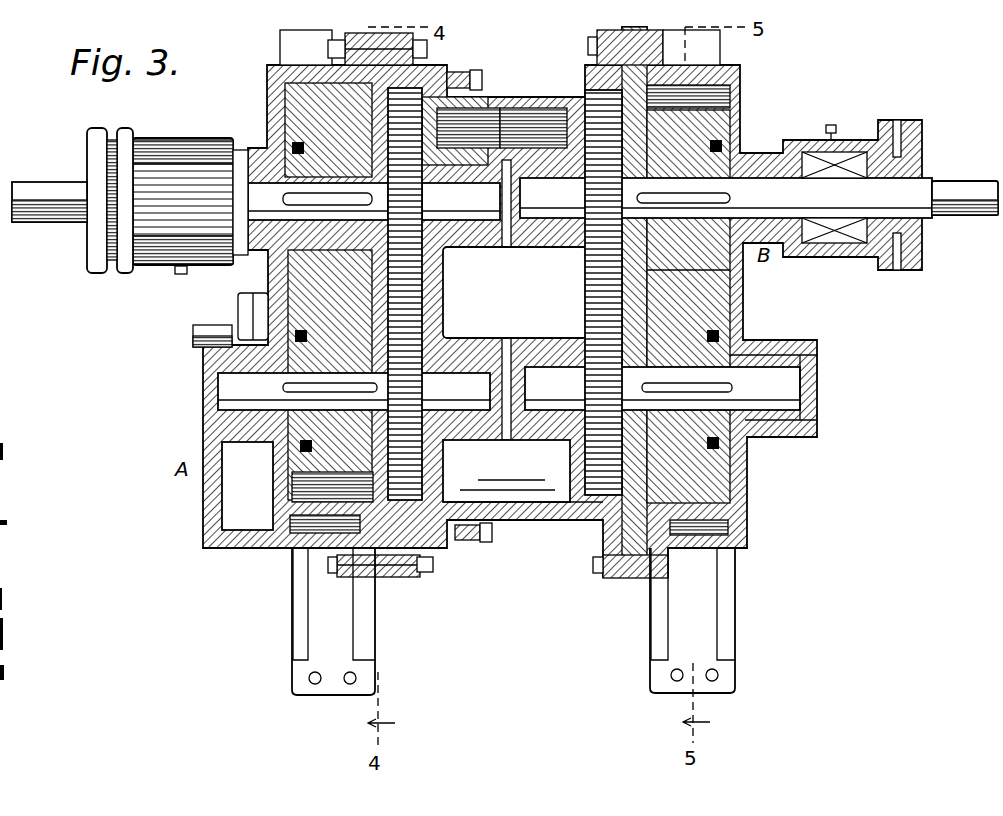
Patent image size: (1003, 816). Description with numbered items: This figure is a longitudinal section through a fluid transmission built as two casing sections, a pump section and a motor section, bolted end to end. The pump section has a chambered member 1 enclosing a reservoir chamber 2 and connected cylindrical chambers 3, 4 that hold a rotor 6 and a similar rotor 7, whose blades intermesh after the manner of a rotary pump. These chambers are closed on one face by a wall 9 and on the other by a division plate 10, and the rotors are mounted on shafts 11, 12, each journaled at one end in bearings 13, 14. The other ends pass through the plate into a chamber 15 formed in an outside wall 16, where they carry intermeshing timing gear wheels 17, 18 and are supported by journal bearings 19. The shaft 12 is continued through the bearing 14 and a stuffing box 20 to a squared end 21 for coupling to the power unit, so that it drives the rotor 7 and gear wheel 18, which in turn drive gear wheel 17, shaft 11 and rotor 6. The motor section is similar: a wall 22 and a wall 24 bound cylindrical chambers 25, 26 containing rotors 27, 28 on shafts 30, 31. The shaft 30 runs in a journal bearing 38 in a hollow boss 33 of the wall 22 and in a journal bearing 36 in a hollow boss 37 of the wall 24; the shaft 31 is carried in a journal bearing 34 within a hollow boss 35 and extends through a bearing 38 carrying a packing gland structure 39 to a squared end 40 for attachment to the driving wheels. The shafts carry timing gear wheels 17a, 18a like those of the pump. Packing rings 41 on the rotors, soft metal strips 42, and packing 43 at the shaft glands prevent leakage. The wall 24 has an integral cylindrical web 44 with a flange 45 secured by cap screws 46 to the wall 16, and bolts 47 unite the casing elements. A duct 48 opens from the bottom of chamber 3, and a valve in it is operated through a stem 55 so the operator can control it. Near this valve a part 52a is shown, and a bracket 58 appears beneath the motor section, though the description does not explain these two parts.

The chambered member 1 is at (205, 492).
The chamber 2 is at (247, 486).
The chamber 3 is at (331, 502).
The chamber 4 is at (283, 90).
The rotor 6 is at (308, 462).
The rotor 7 is at (290, 108).
The wall 9 is at (284, 450).
The division plate 10 is at (380, 578).
The shaft 11 is at (354, 391).
The shaft 12 is at (374, 201).
The bearing 13 is at (222, 420).
The bearing 14 is at (253, 266).
The chamber 15 is at (443, 268).
The outside wall 16 is at (443, 286).
The gear wheel 17 is at (447, 448).
The timing gear wheel 17a is at (516, 473).
The gear wheel 18 is at (410, 97).
The timing gear wheel 18a is at (600, 110).
The journal bearings 19 is at (468, 350).
The stuffing box 20 is at (190, 206).
The squared end 21 is at (48, 220).
The wall 22 is at (745, 283).
The wall 24 is at (578, 292).
The chamber 25 is at (737, 500).
The chamber 26 is at (735, 97).
The rotor 27 is at (718, 482).
The rotor 28 is at (735, 110).
The shaft 30 is at (662, 388).
The shaft 31 is at (726, 198).
The hollow boss 33 is at (805, 437).
The journal bearing 34 is at (525, 250).
The hollow boss 35 is at (542, 243).
The journal bearing 36 is at (592, 440).
The hollow boss 37 is at (509, 452).
The bearing 38 is at (785, 138).
The packing gland structure 39 is at (845, 140).
The squared end 40 is at (962, 185).
The packing rings 41 is at (285, 330).
The soft metal strips 42 is at (428, 562).
The packing 43 is at (830, 250).
The cylindrical web 44 is at (525, 520).
The flange 45 is at (465, 548).
The cap screws 46 is at (478, 80).
The bolts 47 is at (332, 48).
The duct 48 is at (265, 549).
The plug 52a is at (258, 318).
The stem 55 is at (200, 332).
The supporting bracket 58 is at (735, 550).